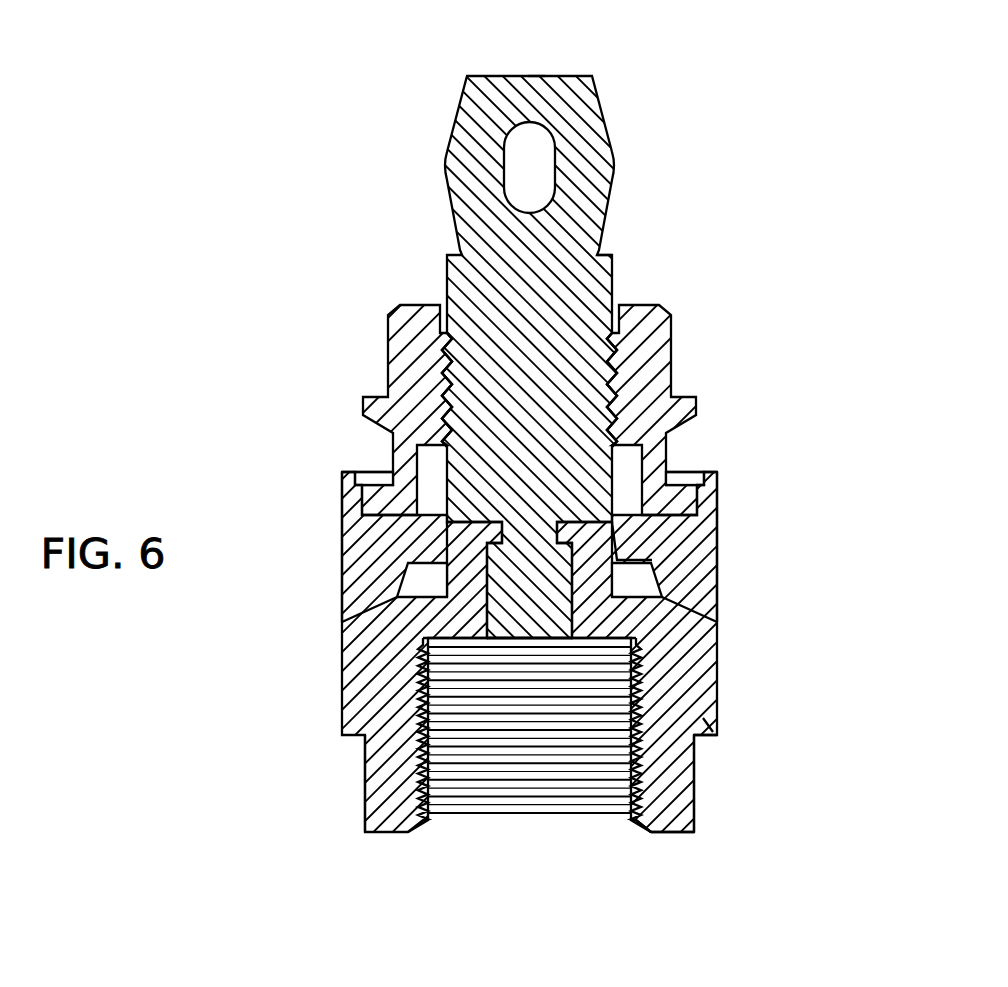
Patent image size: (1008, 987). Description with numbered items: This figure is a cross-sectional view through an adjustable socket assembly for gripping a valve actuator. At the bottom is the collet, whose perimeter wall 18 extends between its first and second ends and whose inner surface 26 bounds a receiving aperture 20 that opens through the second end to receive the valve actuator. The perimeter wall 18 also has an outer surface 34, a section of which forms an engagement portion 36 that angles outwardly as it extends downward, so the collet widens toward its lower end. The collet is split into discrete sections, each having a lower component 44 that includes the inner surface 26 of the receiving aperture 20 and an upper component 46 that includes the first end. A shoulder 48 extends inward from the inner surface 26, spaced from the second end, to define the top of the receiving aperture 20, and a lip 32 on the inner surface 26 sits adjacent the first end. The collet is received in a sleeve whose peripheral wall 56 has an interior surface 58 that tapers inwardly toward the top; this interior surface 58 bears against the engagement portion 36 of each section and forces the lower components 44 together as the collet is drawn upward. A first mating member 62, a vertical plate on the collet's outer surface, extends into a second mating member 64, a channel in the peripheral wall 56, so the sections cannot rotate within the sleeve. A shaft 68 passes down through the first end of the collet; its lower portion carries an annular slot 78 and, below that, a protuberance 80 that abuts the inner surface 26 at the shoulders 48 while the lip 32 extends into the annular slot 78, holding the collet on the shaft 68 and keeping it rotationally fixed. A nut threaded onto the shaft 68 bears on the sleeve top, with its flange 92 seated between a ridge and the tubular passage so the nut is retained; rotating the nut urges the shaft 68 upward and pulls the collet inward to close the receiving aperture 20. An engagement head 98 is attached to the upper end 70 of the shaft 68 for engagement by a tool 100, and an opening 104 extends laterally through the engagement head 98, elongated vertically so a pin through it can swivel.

The perimeter wall 18 is at (662, 812).
The receiving aperture 20 is at (504, 482).
The inner surface 26 is at (518, 775).
The lip 32 is at (578, 523).
The outer surface 34 is at (690, 797).
The engagement portion 36 is at (405, 575).
The lower component 44 is at (352, 776).
The upper component 46 is at (340, 603).
The shoulder 48 is at (455, 640).
The peripheral wall 56 is at (683, 540).
The interior surface 58 is at (425, 565).
The first mating member 62 is at (713, 725).
The second mating member 64 is at (712, 593).
The shaft 68 is at (568, 320).
The upper end 70 is at (604, 245).
The annular slot 78 is at (556, 524).
The protuberance 80 is at (532, 620).
The flange 92 is at (383, 500).
The engagement head 98 is at (575, 127).
The tool 100 is at (530, 73).
The opening 104 is at (516, 171).